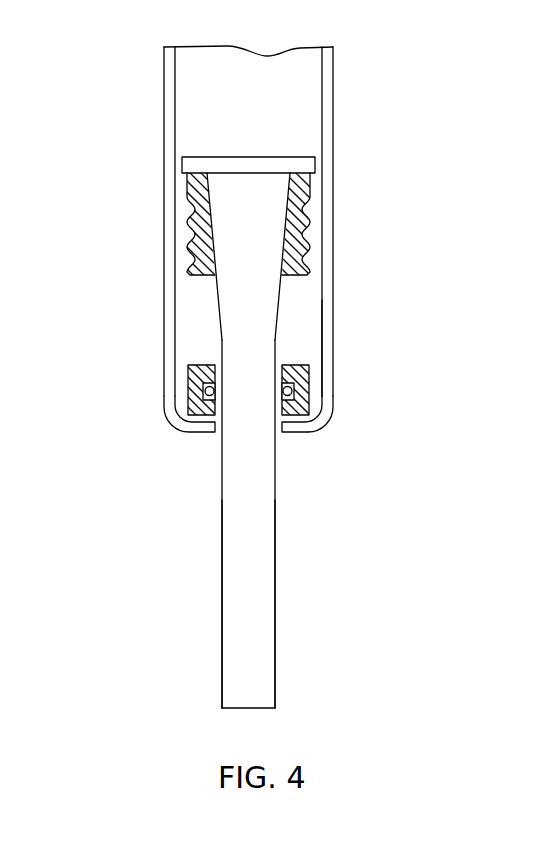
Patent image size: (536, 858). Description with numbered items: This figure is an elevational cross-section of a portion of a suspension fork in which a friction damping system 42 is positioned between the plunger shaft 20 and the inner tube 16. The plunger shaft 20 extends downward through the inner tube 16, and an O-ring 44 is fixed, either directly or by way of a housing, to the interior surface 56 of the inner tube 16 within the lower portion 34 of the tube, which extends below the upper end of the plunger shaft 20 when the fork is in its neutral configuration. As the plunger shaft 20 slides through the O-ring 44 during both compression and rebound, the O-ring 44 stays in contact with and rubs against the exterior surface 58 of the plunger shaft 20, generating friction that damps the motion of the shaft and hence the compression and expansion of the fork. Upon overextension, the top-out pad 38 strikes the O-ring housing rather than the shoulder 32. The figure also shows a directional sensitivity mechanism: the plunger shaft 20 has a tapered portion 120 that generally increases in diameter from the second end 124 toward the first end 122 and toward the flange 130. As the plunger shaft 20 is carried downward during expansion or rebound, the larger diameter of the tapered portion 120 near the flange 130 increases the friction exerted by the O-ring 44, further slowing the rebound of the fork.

The inner tube 16 is at (334, 126).
The flange 130 is at (187, 183).
The top-out pad 38 is at (308, 247).
The first end 122 is at (305, 213).
The tapered portion 120 is at (248, 343).
The interior surface 56 is at (323, 359).
The lower portion 34 is at (333, 390).
The shoulder 32 is at (200, 436).
The O-ring 44 is at (200, 391).
The damping system 42 is at (305, 408).
The exterior surface 58 is at (275, 525).
The plunger shaft 20 is at (265, 598).
The second end 124 is at (275, 708).